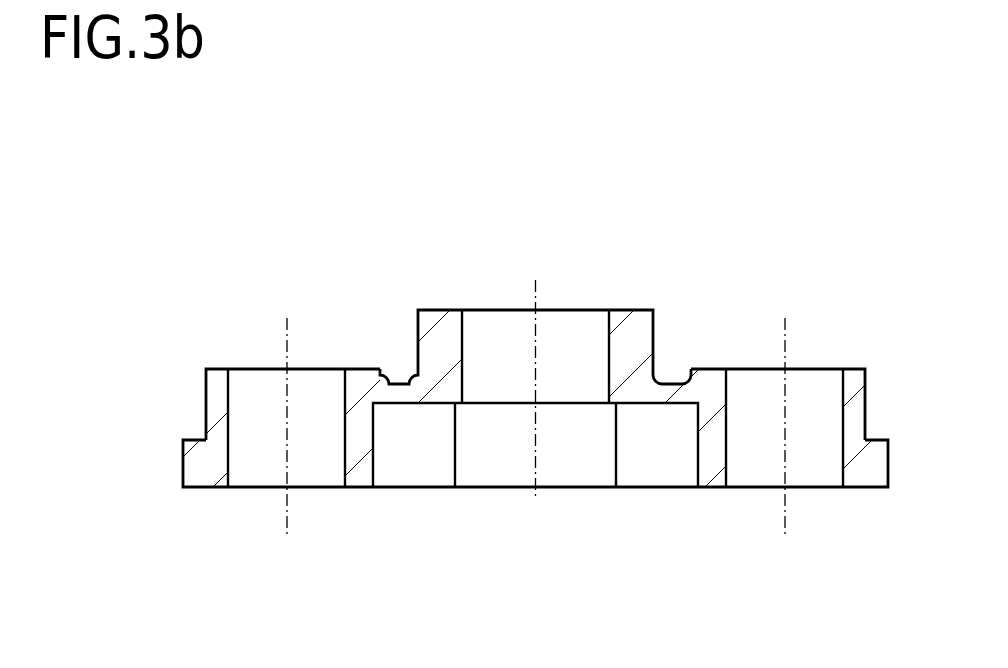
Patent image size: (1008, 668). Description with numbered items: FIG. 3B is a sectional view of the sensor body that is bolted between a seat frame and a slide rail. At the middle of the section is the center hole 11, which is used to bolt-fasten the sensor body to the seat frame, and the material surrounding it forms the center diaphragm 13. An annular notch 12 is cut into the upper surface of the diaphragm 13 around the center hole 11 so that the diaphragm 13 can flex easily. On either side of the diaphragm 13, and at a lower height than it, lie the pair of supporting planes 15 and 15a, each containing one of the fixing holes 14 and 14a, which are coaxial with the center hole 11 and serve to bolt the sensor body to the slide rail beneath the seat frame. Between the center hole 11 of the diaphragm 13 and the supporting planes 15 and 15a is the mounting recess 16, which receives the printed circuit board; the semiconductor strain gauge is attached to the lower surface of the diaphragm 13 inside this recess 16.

The center hole 11 is at (570, 330).
The annular notch 12 is at (672, 373).
The center diaphragm 13 is at (647, 405).
The fixing hole 14 is at (255, 388).
The fixing hole 14a is at (817, 382).
The supporting plane 15 is at (214, 488).
The supporting plane 15a is at (865, 487).
The mounting recess 16 is at (413, 467).